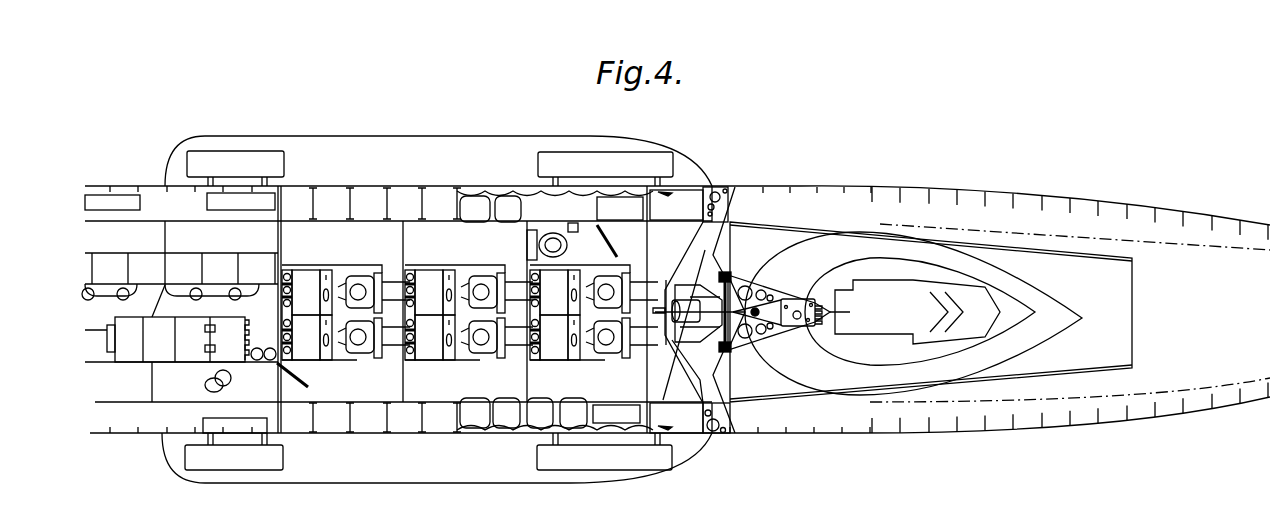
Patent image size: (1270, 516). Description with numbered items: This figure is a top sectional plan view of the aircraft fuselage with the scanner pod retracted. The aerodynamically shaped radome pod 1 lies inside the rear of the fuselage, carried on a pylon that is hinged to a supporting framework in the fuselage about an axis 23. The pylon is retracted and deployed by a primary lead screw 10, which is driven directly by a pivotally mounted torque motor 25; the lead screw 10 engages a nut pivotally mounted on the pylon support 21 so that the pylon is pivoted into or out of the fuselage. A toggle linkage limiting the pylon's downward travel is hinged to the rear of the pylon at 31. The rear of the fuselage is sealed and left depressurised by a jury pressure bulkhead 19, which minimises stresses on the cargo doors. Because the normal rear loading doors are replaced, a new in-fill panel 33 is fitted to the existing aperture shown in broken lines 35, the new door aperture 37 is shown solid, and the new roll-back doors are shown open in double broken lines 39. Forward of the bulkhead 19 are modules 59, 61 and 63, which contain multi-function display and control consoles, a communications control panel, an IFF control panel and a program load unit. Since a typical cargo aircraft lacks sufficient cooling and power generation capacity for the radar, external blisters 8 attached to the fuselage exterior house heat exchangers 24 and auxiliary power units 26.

The radome pod 1 is at (948, 378).
The external blisters 8 is at (617, 142).
The primary lead screw 10 is at (683, 373).
The jury pressure bulkhead 19 is at (677, 268).
The pylon support 21 is at (766, 290).
The axis 23 is at (737, 272).
The heat exchangers 24 is at (222, 160).
The torque motor 25 is at (730, 212).
The auxiliary power units 26 is at (545, 153).
The hinge 31 is at (803, 328).
The in-fill panel 33 is at (1196, 288).
The existing aperture 35 is at (1230, 245).
The new door aperture 37 is at (1132, 341).
The open position of roll-back doors 39 is at (1080, 260).
The module 59 is at (357, 230).
The module 61 is at (430, 237).
The module 63 is at (587, 237).